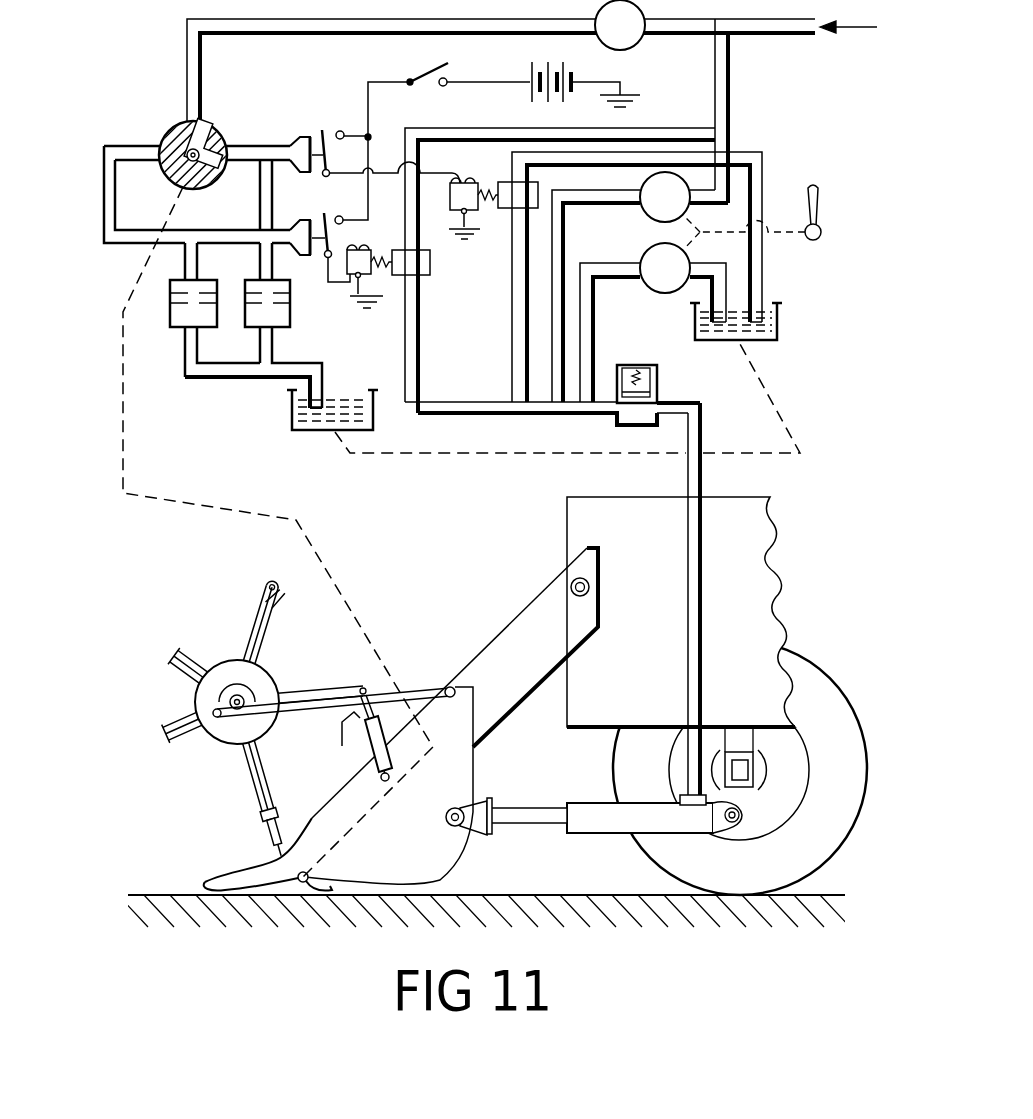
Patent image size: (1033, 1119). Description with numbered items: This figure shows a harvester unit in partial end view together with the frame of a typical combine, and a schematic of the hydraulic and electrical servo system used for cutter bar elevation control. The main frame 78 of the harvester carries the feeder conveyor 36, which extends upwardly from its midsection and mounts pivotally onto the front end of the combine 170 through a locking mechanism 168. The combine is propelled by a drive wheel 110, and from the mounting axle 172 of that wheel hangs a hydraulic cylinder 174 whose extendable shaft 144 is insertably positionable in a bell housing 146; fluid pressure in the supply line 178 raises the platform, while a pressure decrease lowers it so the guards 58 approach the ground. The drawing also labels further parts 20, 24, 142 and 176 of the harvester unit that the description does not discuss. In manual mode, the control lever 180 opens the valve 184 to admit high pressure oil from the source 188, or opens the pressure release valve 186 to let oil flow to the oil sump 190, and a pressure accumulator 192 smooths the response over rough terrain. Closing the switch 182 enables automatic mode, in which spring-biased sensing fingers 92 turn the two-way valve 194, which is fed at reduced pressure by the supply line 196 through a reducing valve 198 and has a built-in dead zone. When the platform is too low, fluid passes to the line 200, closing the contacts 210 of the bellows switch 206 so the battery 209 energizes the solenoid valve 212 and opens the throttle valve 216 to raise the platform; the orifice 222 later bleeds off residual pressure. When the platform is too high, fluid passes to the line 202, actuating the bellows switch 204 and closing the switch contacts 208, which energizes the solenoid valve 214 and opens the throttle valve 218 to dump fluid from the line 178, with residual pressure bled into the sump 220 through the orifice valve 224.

The rotary wheel 20 is at (243, 645).
The link 24 is at (410, 690).
The feeder conveyor 36 is at (513, 620).
The guards 58 is at (217, 876).
The main frame 78 is at (476, 772).
The sensing fingers 92 is at (330, 874).
The drive wheel 110 is at (829, 676).
The cylinder 142 is at (368, 748).
The extendable shaft 144 is at (552, 826).
The bell housing 146 is at (481, 800).
The locking mechanism 168 is at (591, 584).
The combine 170 is at (786, 562).
The mounting axle 172 is at (747, 784).
The hydraulic cylinder 174 is at (620, 834).
The pin 176 is at (734, 823).
The supply line 178 is at (686, 532).
The control lever 180 is at (818, 203).
The switch 182 is at (425, 72).
The valve 184 is at (644, 210).
The pressure release valve 186 is at (644, 255).
The source 188 is at (858, 8).
The oil sump 190 is at (778, 322).
The pressure accumulator 192 is at (658, 383).
The two-way valve 194 is at (188, 158).
The supply line 196 is at (398, 20).
The reducing valve 198 is at (642, 18).
The line 200 is at (104, 182).
The line 202 is at (248, 167).
The bellows switch 204 is at (305, 132).
The bellows switch 206 is at (303, 224).
The switch contacts 208 is at (346, 118).
The battery 209 is at (532, 84).
The contacts 210 is at (340, 215).
The solenoid valve 212 is at (386, 241).
The solenoid valve 214 is at (461, 188).
The throttle valve 216 is at (432, 266).
The throttle valve 218 is at (549, 178).
The sump 220 is at (290, 410).
The orifice 222 is at (170, 315).
The orifice valve 224 is at (290, 318).